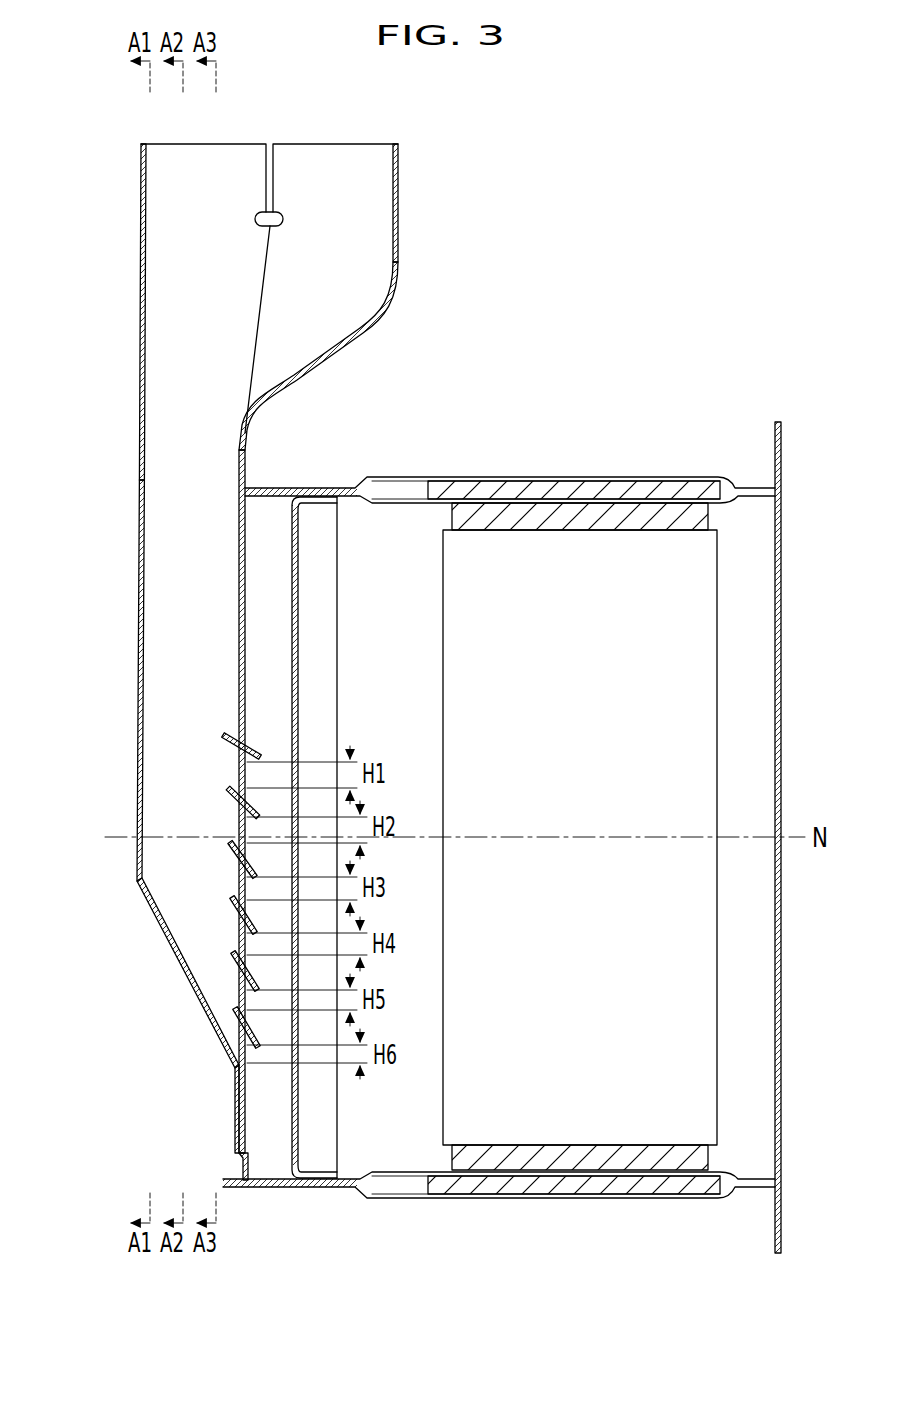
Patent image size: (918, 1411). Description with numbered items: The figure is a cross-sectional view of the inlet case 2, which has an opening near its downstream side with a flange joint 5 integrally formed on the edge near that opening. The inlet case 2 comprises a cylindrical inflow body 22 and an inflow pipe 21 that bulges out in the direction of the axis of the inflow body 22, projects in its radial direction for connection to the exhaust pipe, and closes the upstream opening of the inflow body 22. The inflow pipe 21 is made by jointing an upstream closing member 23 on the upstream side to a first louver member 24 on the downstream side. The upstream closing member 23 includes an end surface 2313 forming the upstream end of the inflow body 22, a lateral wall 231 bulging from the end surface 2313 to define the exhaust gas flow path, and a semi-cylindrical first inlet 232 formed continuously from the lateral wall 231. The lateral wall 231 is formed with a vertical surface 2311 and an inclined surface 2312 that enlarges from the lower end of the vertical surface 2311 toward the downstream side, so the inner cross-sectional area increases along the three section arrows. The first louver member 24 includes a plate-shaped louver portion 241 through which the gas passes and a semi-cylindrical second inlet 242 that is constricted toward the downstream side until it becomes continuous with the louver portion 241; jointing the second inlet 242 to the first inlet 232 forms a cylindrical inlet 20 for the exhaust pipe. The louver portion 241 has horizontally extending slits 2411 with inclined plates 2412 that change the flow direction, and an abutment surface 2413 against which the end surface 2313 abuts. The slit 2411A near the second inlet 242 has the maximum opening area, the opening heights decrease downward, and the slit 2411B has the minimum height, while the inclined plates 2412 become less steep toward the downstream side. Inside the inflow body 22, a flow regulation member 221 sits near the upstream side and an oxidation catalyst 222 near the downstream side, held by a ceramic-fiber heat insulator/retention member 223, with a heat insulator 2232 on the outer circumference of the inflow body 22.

The inlet case 2 is at (575, 148).
The flange joint 5 is at (777, 424).
The cylindrical inlet 20 is at (362, 263).
The inflow pipe 21 is at (300, 120).
The inflow body 22 is at (587, 390).
The upstream closing member 23 is at (221, 155).
The first louver member 24 is at (363, 158).
The flow regulation member 221 is at (311, 522).
The oxidation catalyst 222 is at (443, 692).
The heat insulator/retention member 223 is at (646, 516).
The lateral wall 231 is at (139, 588).
The first inlet 232 is at (142, 197).
The louver portion 241 is at (261, 525).
The second inlet 242 is at (400, 186).
The heat insulator 2232 is at (529, 488).
The vertical surface 2311 is at (138, 750).
The inclined surface 2312 is at (173, 947).
The end surface 2313 is at (238, 1131).
The slits 2411 is at (240, 764).
The slit near the second inlet 2411A is at (240, 613).
The slit with minimum opening height 2411B is at (237, 1058).
The inclined plates 2412 is at (240, 813).
The abutment surface 2413 is at (249, 1133).